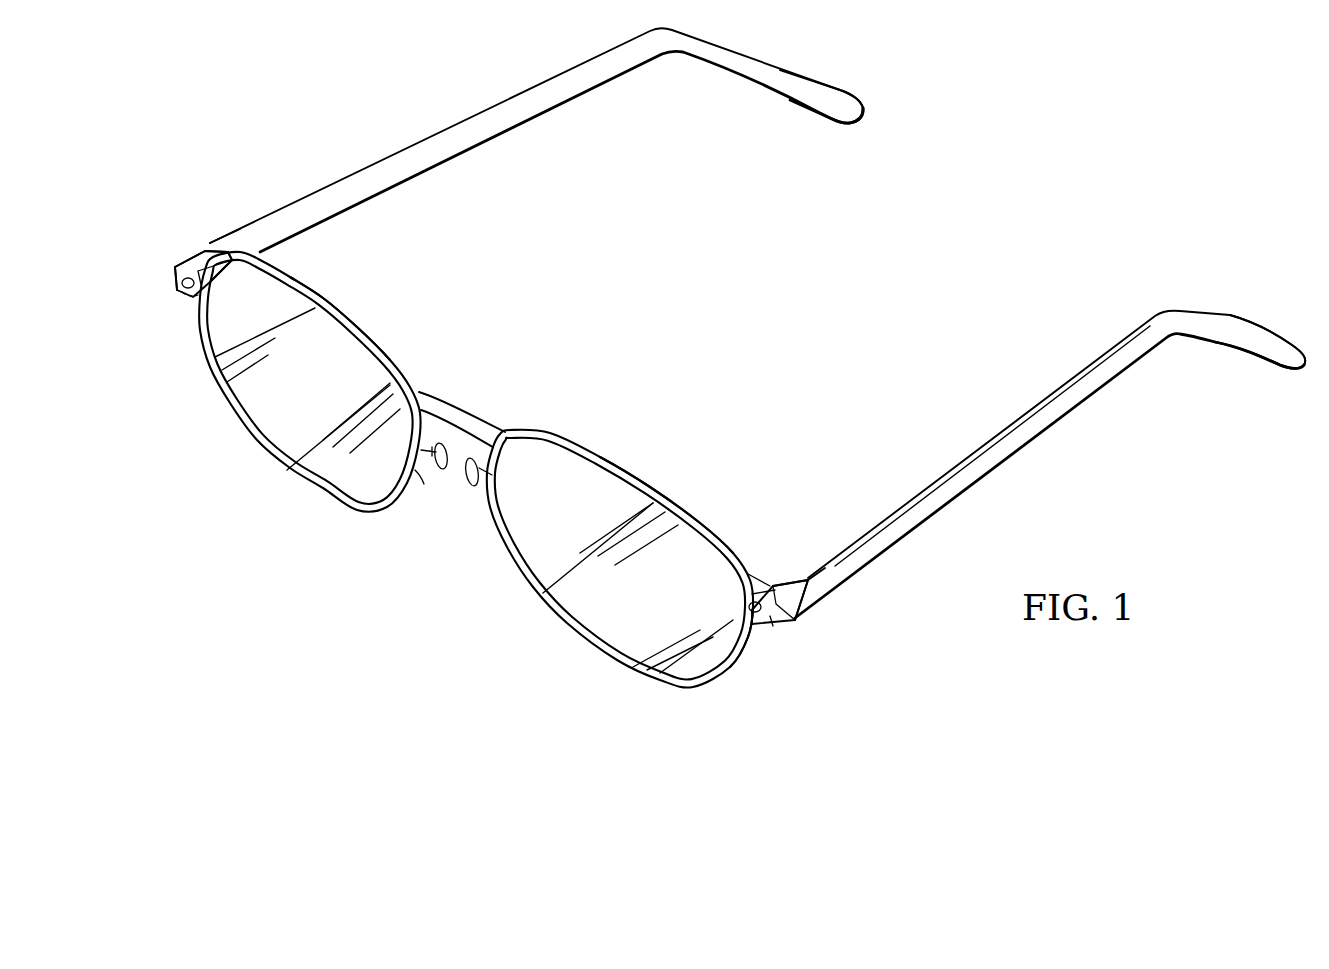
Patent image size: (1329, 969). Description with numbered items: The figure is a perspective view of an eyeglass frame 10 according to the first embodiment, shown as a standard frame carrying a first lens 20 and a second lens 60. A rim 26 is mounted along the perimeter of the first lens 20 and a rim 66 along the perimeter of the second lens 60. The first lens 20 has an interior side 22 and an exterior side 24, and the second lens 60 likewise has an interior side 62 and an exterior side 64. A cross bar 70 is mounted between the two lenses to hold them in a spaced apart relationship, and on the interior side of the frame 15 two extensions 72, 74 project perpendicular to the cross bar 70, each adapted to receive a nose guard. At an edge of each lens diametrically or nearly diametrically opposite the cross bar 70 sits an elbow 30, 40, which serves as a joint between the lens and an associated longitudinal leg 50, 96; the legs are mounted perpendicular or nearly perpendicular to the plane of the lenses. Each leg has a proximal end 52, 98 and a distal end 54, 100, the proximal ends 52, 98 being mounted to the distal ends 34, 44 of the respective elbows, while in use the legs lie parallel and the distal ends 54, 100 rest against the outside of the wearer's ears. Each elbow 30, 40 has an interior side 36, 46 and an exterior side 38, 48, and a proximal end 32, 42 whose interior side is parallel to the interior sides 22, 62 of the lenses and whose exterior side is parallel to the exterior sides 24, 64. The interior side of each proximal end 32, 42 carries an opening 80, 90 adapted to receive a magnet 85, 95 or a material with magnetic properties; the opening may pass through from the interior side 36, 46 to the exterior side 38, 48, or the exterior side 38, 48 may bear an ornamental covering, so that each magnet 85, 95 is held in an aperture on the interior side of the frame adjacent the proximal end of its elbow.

The eyeglass frame 10 is at (288, 593).
The frame 15 is at (576, 402).
The first lens 20 is at (296, 440).
The interior side of first lens 22 is at (420, 490).
The exterior side of first lens 24 is at (196, 342).
The rim of first lens 26 is at (332, 302).
The elbow 30 is at (175, 275).
The proximal end of elbow 32 is at (197, 262).
The distal end of elbow 34 is at (212, 256).
The interior side of elbow 36 is at (230, 270).
The exterior side of elbow 38 is at (186, 264).
The elbow 40 is at (770, 635).
The proximal end of elbow 42 is at (757, 590).
The distal end of elbow 44 is at (791, 580).
The interior side of elbow 46 is at (778, 582).
The exterior side of elbow 48 is at (793, 605).
The longitudinal leg 50 is at (466, 140).
The proximal end of longitudinal leg 52 is at (212, 246).
The distal end of longitudinal leg 54 is at (785, 80).
The second lens 60 is at (616, 620).
The interior side of second lens 62 is at (484, 516).
The exterior side of second lens 64 is at (752, 650).
The rim of second lens 66 is at (626, 470).
The cross bar 70 is at (462, 420).
The extension 72 is at (428, 466).
The extension 74 is at (488, 480).
The opening 80 is at (222, 285).
The magnet 85 is at (192, 302).
The opening 90 is at (768, 612).
The magnet 95 is at (740, 572).
The longitudinal leg 96 is at (1034, 423).
The proximal end of longitudinal leg 98 is at (809, 578).
The distal end of longitudinal leg 100 is at (1260, 345).